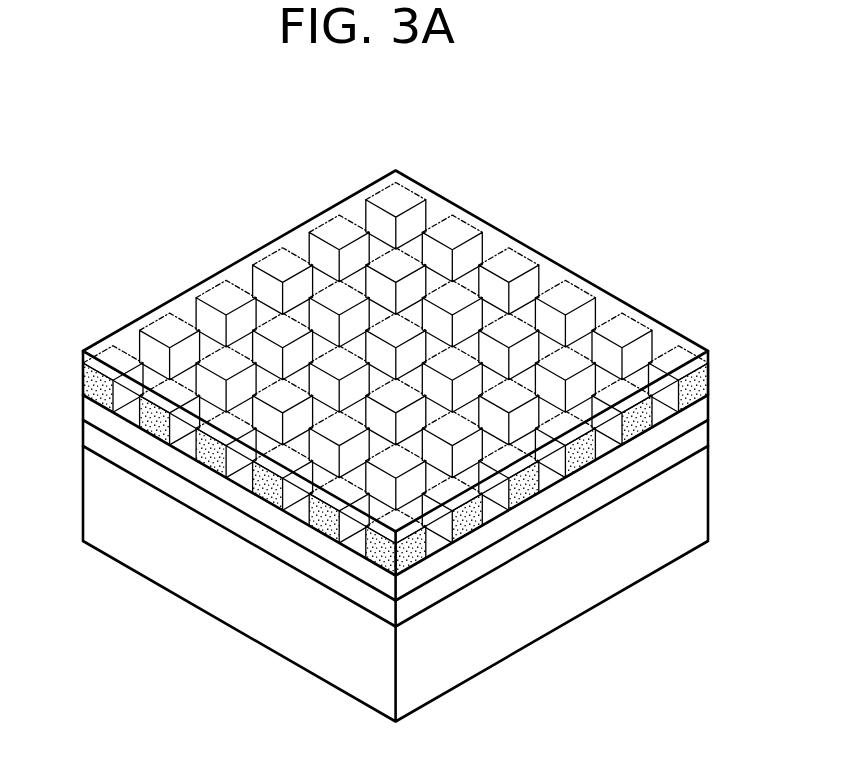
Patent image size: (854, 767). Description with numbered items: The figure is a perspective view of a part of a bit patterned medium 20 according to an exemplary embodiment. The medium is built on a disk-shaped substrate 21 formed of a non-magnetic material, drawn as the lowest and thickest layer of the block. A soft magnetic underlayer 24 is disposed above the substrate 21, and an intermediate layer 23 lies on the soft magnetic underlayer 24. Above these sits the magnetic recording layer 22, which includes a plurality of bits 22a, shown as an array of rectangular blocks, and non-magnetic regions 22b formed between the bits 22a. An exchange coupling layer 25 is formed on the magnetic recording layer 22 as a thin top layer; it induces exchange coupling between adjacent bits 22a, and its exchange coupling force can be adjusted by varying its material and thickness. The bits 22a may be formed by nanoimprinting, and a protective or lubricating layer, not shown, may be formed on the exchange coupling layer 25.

The bit patterned medium 20 is at (122, 240).
The substrate 21 is at (697, 500).
The magnetic recording layer 22 is at (782, 366).
The bits 22a is at (708, 375).
The non-magnetic regions 22b is at (657, 425).
The intermediate layer 23 is at (663, 440).
The soft magnetic underlayer 24 is at (668, 457).
The exchange coupling layer 25 is at (708, 352).